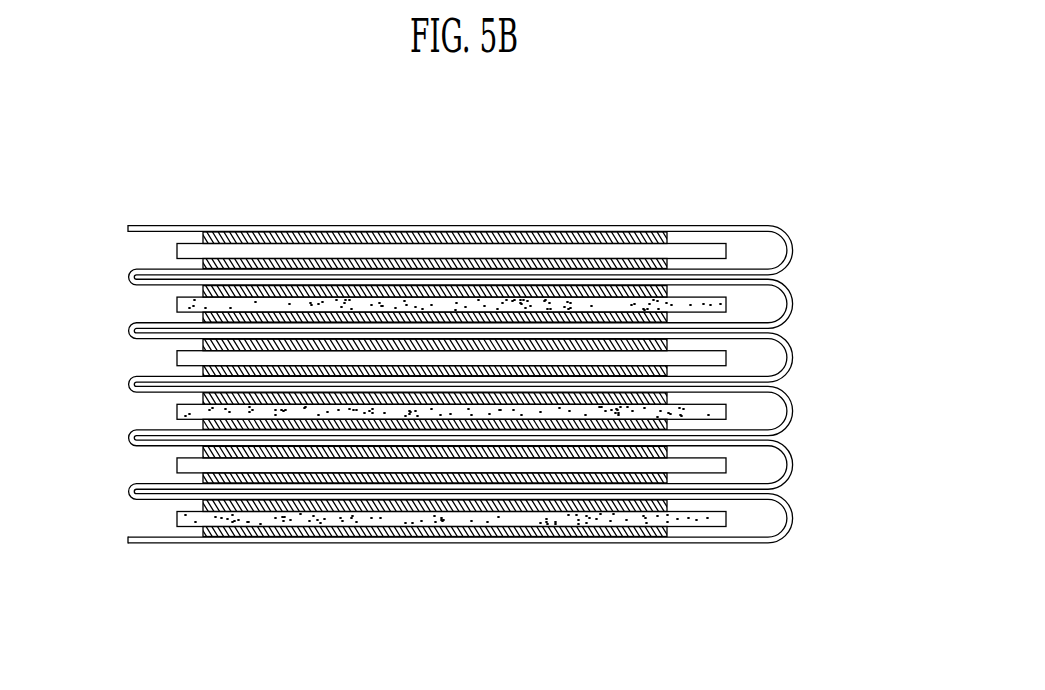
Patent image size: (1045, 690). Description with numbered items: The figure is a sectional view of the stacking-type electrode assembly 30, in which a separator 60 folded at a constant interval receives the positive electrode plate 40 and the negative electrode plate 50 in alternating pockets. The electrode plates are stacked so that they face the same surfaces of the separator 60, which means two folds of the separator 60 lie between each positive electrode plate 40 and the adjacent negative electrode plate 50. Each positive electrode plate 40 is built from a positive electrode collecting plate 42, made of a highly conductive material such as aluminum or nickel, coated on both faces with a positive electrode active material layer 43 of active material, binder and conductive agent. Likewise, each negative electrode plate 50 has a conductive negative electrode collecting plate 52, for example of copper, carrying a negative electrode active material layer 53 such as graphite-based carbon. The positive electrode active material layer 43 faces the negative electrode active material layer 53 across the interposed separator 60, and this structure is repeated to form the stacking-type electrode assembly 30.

The stacking-type electrode assembly 30 is at (433, 386).
The positive electrode plate 40 is at (511, 573).
The positive electrode collecting plate 42 is at (708, 528).
The positive electrode active material layer 43 is at (590, 502).
The negative electrode plate 50 is at (511, 546).
The negative electrode collecting plate 52 is at (717, 475).
The negative electrode active material layer 53 is at (480, 453).
The separator 60 is at (768, 225).